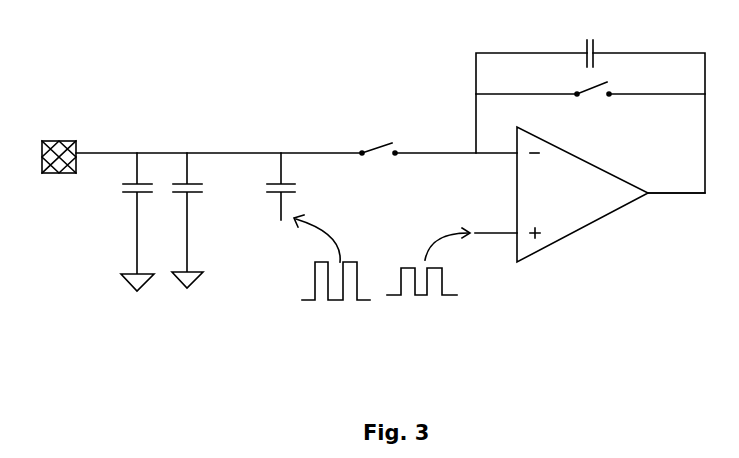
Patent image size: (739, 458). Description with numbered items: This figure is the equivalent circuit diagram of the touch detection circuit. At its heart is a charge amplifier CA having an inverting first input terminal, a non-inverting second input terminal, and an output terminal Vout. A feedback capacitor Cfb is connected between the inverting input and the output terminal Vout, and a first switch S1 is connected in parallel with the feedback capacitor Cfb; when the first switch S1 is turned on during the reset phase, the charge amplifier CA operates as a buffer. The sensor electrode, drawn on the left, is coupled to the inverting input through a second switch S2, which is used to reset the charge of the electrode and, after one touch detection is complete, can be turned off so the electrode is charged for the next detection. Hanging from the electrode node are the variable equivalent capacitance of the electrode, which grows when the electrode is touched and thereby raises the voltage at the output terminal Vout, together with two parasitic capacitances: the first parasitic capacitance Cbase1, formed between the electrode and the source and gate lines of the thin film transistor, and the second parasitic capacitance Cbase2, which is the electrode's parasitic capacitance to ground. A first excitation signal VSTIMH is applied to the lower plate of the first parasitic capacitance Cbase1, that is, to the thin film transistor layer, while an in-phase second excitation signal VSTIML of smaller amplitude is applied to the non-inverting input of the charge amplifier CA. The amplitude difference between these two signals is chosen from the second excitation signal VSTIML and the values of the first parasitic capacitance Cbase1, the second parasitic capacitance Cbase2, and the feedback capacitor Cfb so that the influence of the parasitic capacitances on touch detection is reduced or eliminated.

The second parasitic capacitance Cbase2 is at (215, 220).
The first parasitic capacitance Cbase1 is at (308, 186).
The second switch S2 is at (378, 140).
The first excitation signal VSTIMH is at (332, 269).
The second excitation signal VSTIML is at (428, 275).
The feedback capacitor Cfb is at (590, 46).
The first switch S1 is at (593, 85).
The charge amplifier CA is at (582, 194).
The output terminal Vout is at (676, 186).